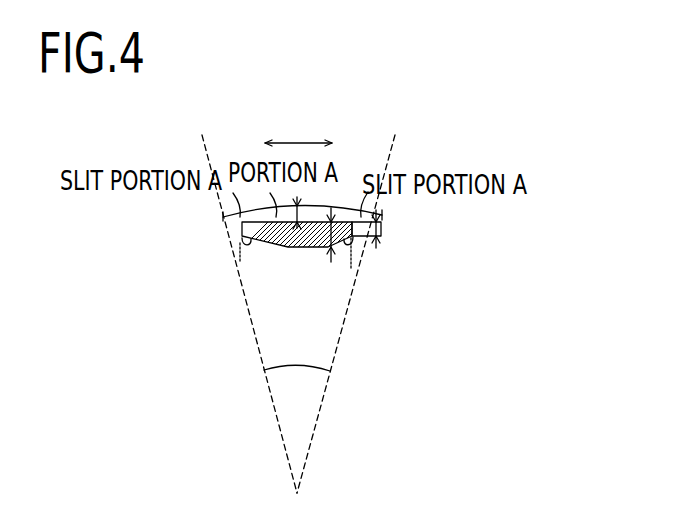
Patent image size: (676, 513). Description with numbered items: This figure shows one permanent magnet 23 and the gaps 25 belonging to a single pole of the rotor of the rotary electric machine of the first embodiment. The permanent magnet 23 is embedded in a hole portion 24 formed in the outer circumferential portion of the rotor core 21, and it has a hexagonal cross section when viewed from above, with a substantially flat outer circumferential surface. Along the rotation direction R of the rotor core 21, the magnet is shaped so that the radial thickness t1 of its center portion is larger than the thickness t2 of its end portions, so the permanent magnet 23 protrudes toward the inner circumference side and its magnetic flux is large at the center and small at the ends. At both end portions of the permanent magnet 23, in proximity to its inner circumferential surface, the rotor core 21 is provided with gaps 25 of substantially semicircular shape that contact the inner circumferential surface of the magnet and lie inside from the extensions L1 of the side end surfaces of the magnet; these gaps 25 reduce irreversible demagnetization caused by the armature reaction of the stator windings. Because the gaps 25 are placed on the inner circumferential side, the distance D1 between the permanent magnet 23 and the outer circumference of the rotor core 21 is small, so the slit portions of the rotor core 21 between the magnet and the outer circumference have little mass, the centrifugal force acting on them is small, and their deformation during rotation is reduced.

The rotor core 21 is at (325, 340).
The permanent magnet 23 is at (288, 247).
The hole portion 24 is at (346, 230).
The gap 25 is at (247, 244).
The extension of side end surface L1 is at (238, 254).
The distance D1 is at (301, 213).
The radial thickness of center portion t1 is at (321, 241).
The thickness of end portions t2 is at (384, 229).
The rotation direction R is at (298, 131).